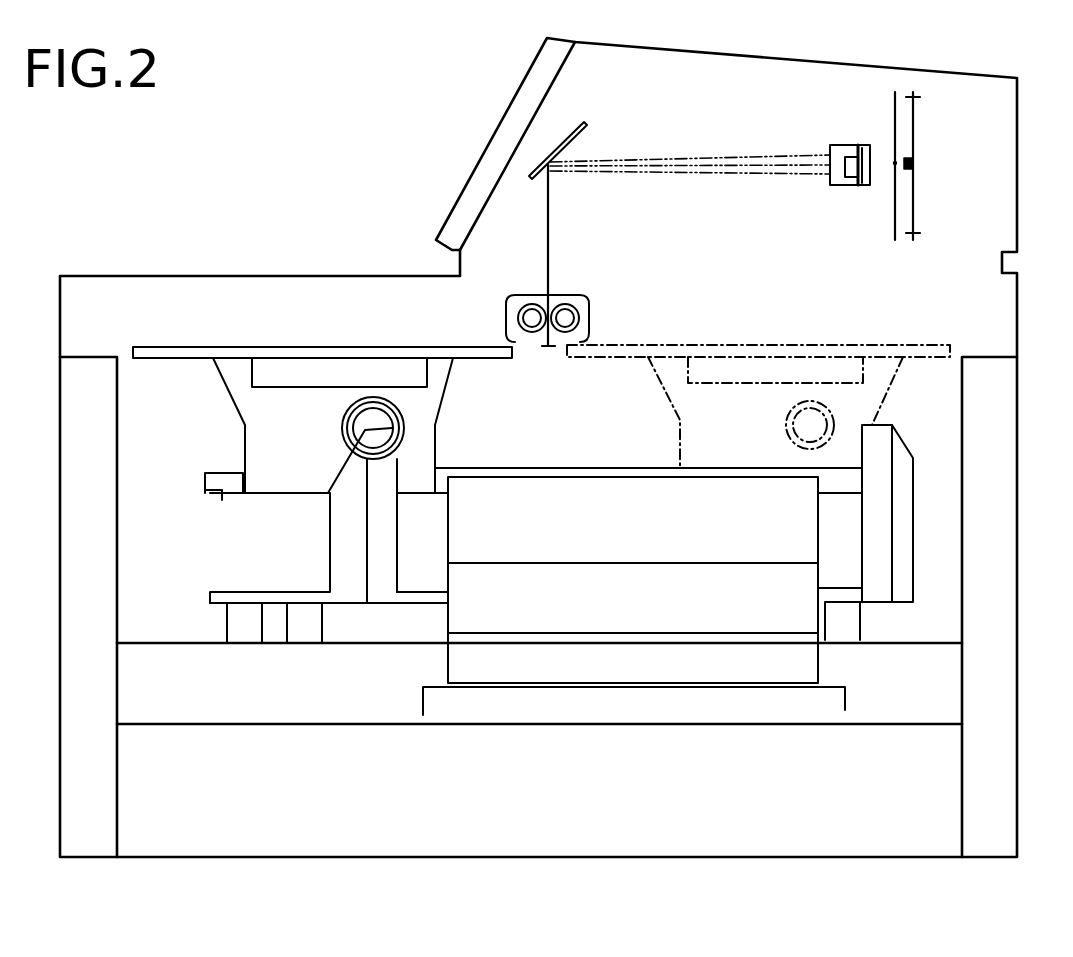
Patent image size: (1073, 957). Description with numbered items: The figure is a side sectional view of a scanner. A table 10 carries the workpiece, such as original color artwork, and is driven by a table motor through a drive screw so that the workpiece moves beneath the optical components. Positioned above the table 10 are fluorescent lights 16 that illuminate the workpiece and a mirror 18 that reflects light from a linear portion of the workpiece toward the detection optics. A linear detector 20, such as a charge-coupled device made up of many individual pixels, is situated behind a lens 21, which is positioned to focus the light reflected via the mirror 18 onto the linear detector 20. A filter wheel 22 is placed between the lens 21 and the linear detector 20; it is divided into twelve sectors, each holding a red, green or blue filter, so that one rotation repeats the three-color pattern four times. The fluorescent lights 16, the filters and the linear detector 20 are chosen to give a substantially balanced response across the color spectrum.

The table 10 is at (165, 348).
The fluorescent lights 16 is at (506, 318).
The mirror 18 is at (586, 123).
The linear detector 20 is at (914, 163).
The lens 21 is at (858, 187).
The filter wheel 22 is at (895, 238).